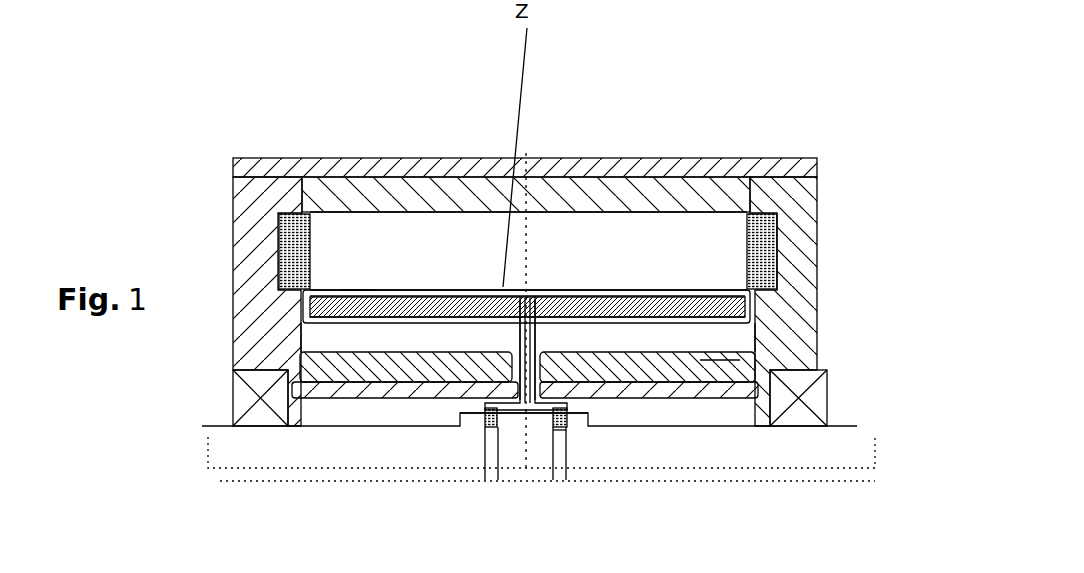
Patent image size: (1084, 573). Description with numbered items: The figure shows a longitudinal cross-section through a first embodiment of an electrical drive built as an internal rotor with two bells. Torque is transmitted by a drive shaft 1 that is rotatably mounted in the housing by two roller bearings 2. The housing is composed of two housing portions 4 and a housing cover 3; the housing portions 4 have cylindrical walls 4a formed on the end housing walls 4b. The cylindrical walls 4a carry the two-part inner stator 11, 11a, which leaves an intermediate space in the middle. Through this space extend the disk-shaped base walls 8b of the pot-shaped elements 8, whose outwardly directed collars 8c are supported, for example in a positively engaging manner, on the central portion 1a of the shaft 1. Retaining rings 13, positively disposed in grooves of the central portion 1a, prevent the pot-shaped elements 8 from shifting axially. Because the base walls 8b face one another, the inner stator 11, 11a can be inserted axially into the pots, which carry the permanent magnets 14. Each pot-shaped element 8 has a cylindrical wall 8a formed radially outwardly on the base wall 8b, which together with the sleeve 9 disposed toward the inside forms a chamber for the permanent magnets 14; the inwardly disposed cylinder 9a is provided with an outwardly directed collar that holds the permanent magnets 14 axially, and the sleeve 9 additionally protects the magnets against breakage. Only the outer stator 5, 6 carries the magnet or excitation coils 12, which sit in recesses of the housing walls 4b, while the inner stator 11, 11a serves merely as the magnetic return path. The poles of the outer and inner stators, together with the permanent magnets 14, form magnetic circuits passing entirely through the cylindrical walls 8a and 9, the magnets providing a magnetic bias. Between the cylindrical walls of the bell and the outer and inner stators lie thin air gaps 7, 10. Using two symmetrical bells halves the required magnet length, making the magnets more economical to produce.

The drive shaft 1 is at (788, 453).
The central portion of the shaft 1a is at (470, 413).
The roller bearings 2 is at (237, 397).
The housing cover 3 is at (763, 158).
The housing portions 4 is at (247, 267).
The cylindrical walls 4a is at (683, 387).
The end housing walls 4b is at (243, 200).
The outer stator 5 is at (380, 263).
The outer stator 6 is at (667, 196).
The air gap 7 is at (357, 290).
The pot-shaped element 8 is at (547, 288).
The cylindrical wall 8a is at (444, 292).
The base wall 8b is at (537, 343).
The outwardly directed collar 8c is at (490, 418).
The sleeve 9 is at (305, 340).
The inwardly disposed cylinder 9a is at (303, 313).
The air gap 10 is at (375, 322).
The inner stator 11 is at (448, 340).
The inner stator 11a is at (717, 368).
The excitation coils 12 is at (283, 238).
The retaining rings 13 is at (560, 437).
The permanent magnets 14 is at (422, 320).